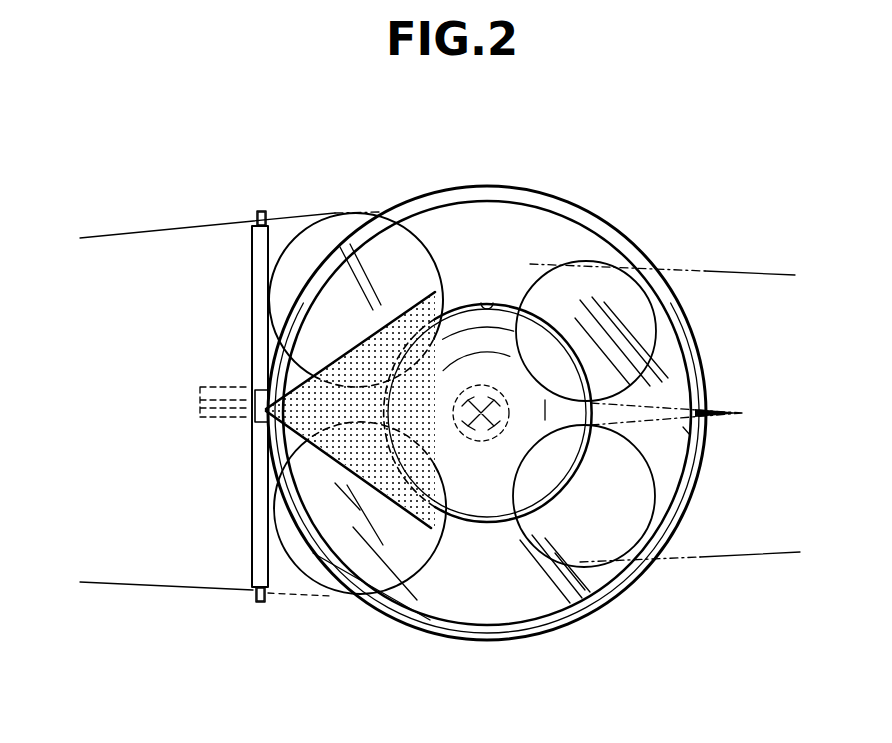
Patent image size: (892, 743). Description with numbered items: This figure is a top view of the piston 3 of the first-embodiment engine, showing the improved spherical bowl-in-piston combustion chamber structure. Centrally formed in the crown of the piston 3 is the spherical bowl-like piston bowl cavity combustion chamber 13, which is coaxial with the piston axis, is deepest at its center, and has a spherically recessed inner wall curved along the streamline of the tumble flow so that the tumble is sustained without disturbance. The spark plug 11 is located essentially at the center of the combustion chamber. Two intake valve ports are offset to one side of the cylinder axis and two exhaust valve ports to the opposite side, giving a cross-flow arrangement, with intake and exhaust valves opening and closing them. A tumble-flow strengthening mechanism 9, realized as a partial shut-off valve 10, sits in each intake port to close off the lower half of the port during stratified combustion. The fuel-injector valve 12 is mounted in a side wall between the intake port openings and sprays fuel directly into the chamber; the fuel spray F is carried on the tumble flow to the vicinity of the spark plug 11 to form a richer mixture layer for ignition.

The piston 3 is at (533, 192).
The tumble-flow strengthening mechanism 9 is at (250, 545).
The partial shut-off valve 10 is at (255, 284).
The spark plug 11 is at (466, 442).
The fuel-injector valve 12 is at (200, 404).
The spherical bowl-like piston bowl cavity combustion chamber 13 is at (495, 299).
The fuel spray F is at (436, 293).